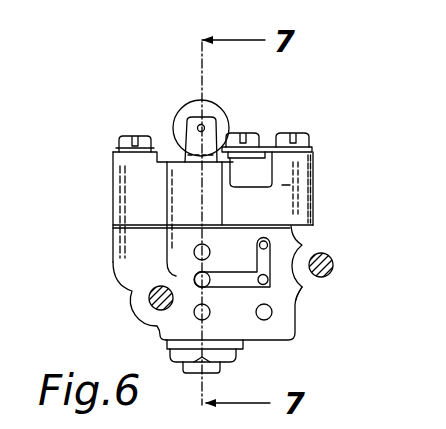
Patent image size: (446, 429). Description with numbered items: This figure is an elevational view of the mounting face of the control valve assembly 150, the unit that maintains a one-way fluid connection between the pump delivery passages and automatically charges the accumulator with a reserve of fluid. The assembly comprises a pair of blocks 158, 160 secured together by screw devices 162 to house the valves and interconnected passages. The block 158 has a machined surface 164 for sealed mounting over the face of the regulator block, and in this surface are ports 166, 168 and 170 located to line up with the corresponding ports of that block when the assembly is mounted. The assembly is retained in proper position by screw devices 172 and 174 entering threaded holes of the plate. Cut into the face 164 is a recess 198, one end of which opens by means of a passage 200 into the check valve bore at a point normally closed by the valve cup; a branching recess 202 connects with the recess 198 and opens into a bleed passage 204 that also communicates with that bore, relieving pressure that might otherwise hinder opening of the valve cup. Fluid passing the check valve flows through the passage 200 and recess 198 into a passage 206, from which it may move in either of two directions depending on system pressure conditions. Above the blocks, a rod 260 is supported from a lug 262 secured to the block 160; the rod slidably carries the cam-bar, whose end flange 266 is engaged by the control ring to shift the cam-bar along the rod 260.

The control valve assembly 150 is at (364, 166).
The block 158 is at (120, 262).
The block 160 is at (127, 178).
The screw devices 162 is at (125, 137).
The machined surface 164 is at (310, 248).
The port 166 is at (267, 314).
The port 168 is at (202, 246).
The port 170 is at (199, 313).
The screw device 172 is at (333, 267).
The screw device 174 is at (150, 299).
The recess 198 is at (235, 287).
The passage 200 is at (267, 282).
The branching recess 202 is at (267, 258).
The bleed passage 204 is at (264, 240).
The passage 206 is at (204, 278).
The rod 260 is at (205, 127).
The lug 262 is at (195, 137).
The flange 266 is at (202, 106).